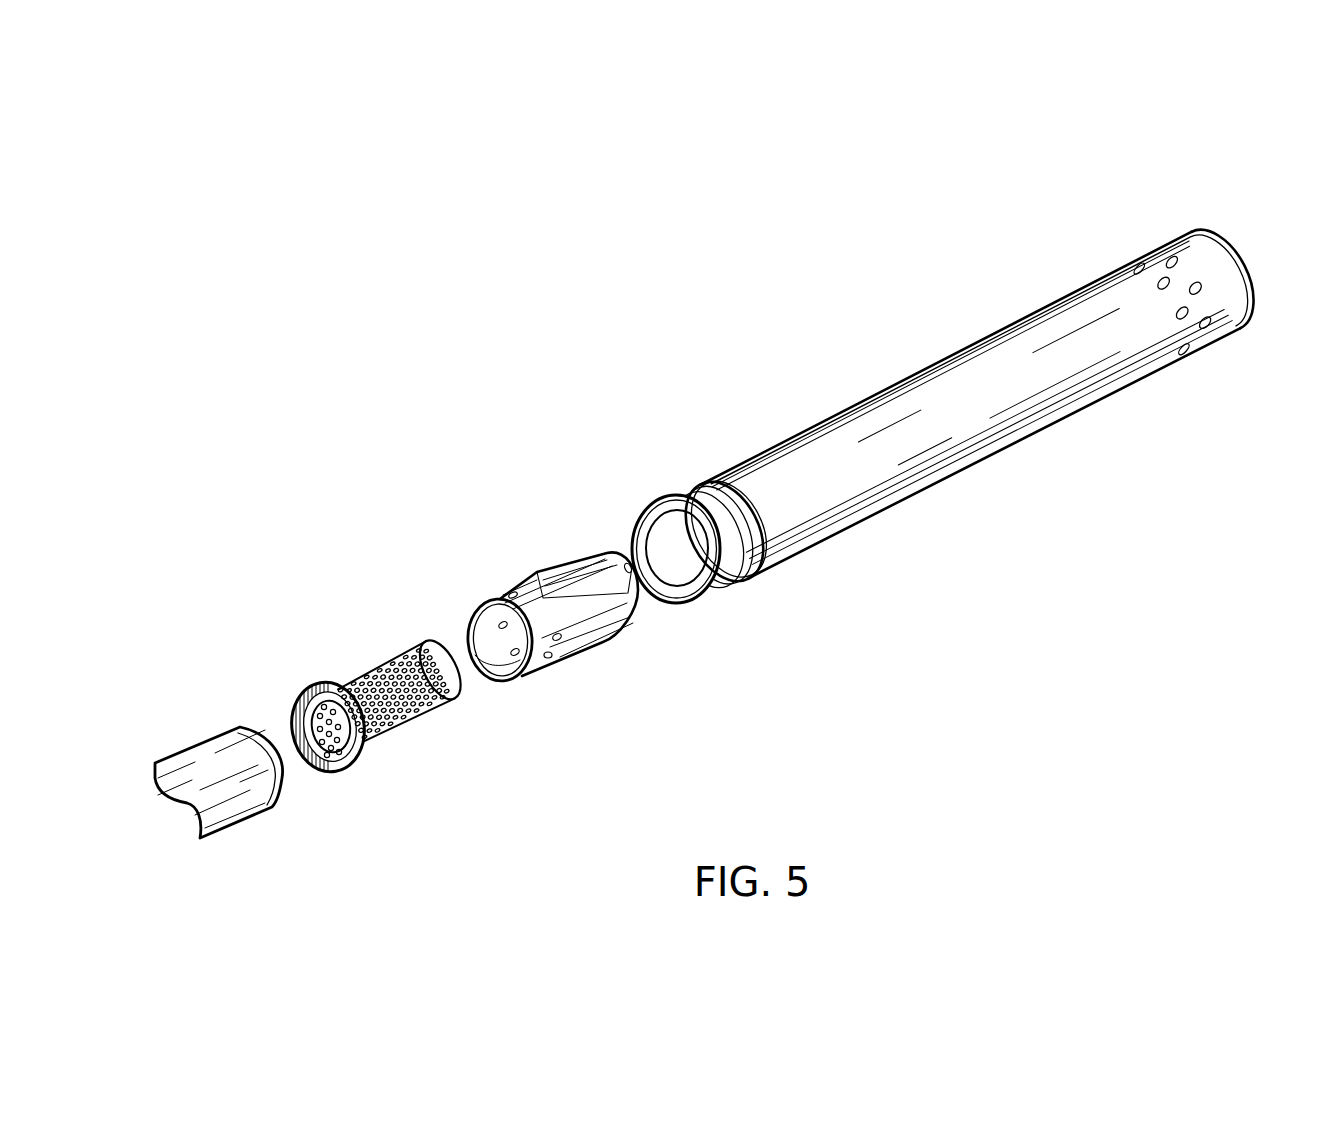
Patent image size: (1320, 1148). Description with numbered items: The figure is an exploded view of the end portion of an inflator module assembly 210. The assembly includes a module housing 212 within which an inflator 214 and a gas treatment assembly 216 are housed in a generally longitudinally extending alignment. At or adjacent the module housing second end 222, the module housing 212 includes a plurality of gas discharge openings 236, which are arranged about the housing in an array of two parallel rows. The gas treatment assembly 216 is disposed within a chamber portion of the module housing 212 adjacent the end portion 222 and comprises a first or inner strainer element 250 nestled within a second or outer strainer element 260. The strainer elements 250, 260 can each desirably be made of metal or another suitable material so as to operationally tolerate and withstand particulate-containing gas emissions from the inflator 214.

The inflator module assembly 210 is at (195, 663).
The module housing 212 is at (935, 398).
The inflator 214 is at (222, 755).
The gas treatment assembly 216 is at (385, 830).
The module housing second end 222 is at (1203, 224).
The gas discharge openings 236 is at (1205, 370).
The inner strainer element 250 is at (398, 665).
The outer strainer element 260 is at (558, 558).